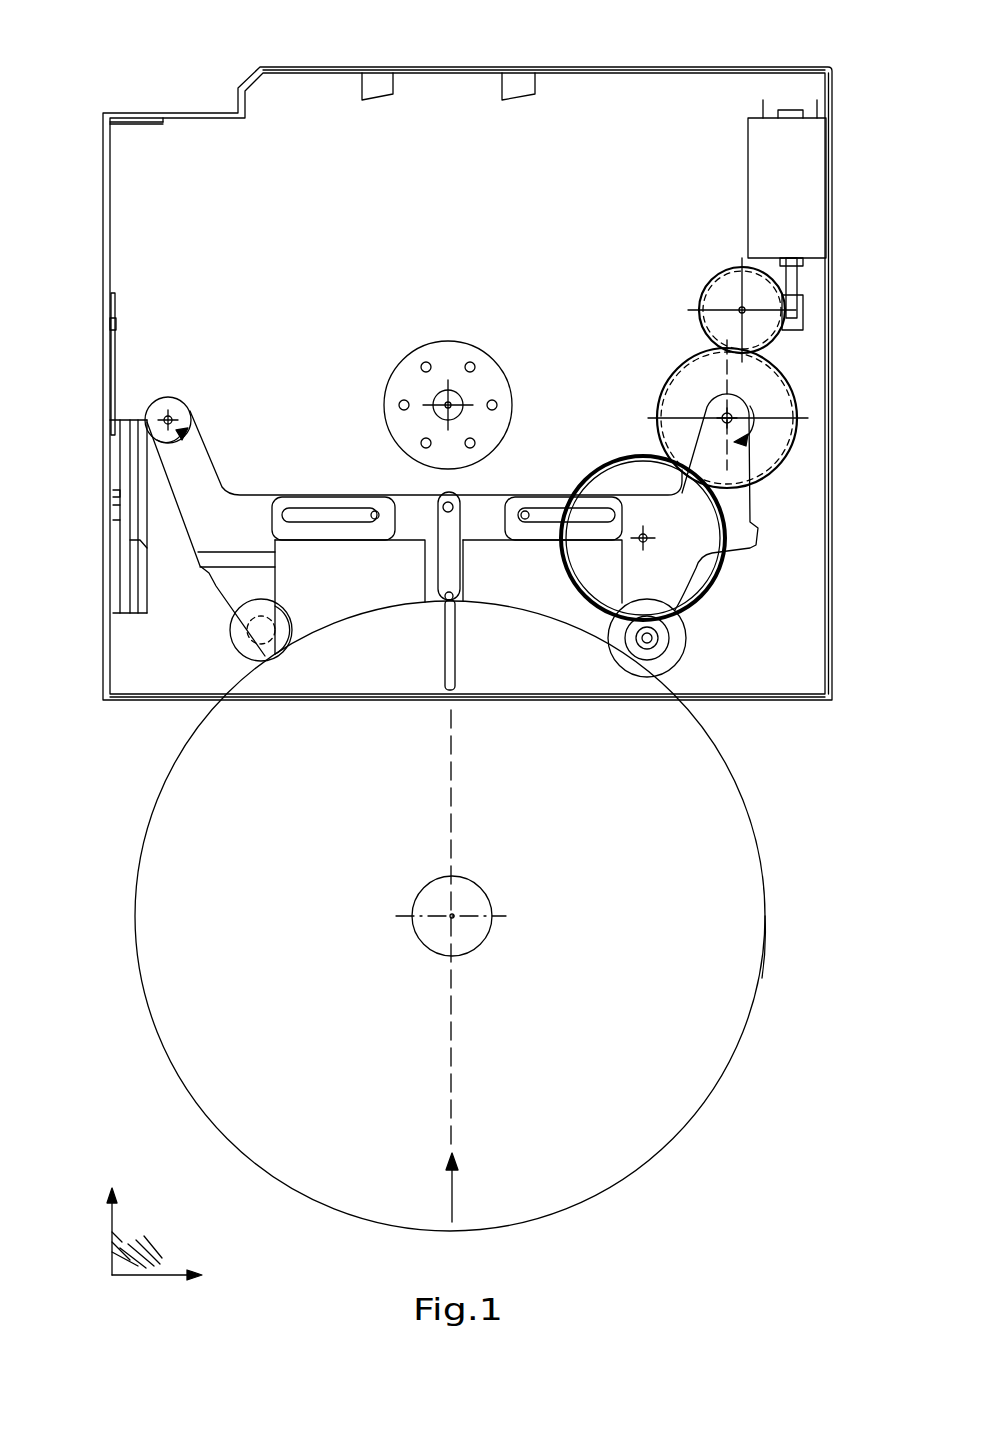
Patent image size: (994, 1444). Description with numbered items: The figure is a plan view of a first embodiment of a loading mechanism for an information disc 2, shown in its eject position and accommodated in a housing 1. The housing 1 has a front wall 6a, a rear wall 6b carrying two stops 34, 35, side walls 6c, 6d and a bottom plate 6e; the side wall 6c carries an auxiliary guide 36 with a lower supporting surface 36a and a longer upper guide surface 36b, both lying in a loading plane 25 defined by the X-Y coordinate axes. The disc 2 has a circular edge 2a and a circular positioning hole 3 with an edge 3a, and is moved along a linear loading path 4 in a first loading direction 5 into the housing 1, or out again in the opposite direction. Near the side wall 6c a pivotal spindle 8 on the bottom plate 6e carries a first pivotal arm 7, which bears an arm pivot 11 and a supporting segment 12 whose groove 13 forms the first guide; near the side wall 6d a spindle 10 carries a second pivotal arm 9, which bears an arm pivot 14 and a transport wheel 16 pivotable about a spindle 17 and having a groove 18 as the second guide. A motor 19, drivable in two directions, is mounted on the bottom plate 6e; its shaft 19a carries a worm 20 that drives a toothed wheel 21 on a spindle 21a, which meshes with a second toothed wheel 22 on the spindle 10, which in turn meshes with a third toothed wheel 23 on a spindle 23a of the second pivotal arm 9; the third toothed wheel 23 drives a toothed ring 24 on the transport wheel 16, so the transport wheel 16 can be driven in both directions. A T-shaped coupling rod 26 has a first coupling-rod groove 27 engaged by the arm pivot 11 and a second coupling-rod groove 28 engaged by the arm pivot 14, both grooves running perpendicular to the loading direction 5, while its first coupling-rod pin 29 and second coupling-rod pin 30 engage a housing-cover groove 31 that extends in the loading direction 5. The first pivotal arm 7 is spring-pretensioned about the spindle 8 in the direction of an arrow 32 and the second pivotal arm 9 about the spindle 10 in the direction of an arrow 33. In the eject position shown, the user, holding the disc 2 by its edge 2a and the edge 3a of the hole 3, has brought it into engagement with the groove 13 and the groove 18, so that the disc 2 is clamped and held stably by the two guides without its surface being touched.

The housing 1 is at (103, 113).
The information disc 2 is at (735, 848).
The circular edge 2a is at (762, 978).
The circular positioning hole 3 is at (470, 930).
The edge of positioning hole 3a is at (425, 950).
The linear loading path 4 is at (452, 820).
The first loading direction 5 is at (455, 1198).
The front wall 6a is at (785, 702).
The rear wall 6b is at (748, 67).
The side wall 6c is at (109, 322).
The side wall 6d is at (832, 358).
The bottom plate 6e is at (197, 138).
The first pivotal arm 7 is at (198, 455).
The pivotal spindle 8 is at (168, 398).
The second pivotal arm 9 is at (742, 548).
The spindle 10 is at (732, 415).
The arm pivot 11 is at (376, 511).
The supporting segment 12 is at (282, 635).
The groove 13 is at (288, 645).
The arm pivot 14 is at (527, 512).
The transport wheel 16 is at (657, 668).
The spindle 17 is at (646, 645).
The groove 18 is at (622, 643).
The motor 19 is at (812, 173).
The motor shaft 19a is at (795, 285).
The worm 20 is at (791, 330).
The toothed wheel 21 is at (714, 319).
The spindle 21a is at (740, 308).
The second toothed wheel 22 is at (672, 402).
The third toothed wheel 23 is at (625, 480).
The spindle 23a is at (648, 540).
The toothed ring 24 is at (660, 643).
The loading plane 25 is at (112, 1245).
The T-shaped coupling rod 26 is at (424, 546).
The first coupling-rod groove 27 is at (334, 520).
The second coupling-rod groove 28 is at (545, 523).
The first coupling-rod pin 29 is at (454, 506).
The second coupling-rod pin 30 is at (460, 603).
The housing-cover groove 31 is at (462, 575).
The arrow 32 is at (170, 442).
The arrow 33 is at (745, 440).
The stop 34 is at (378, 87).
The stop 35 is at (522, 88).
The auxiliary guide 36 is at (114, 529).
The lower supporting surface 36a is at (146, 598).
The upper guide surface 36b is at (136, 482).